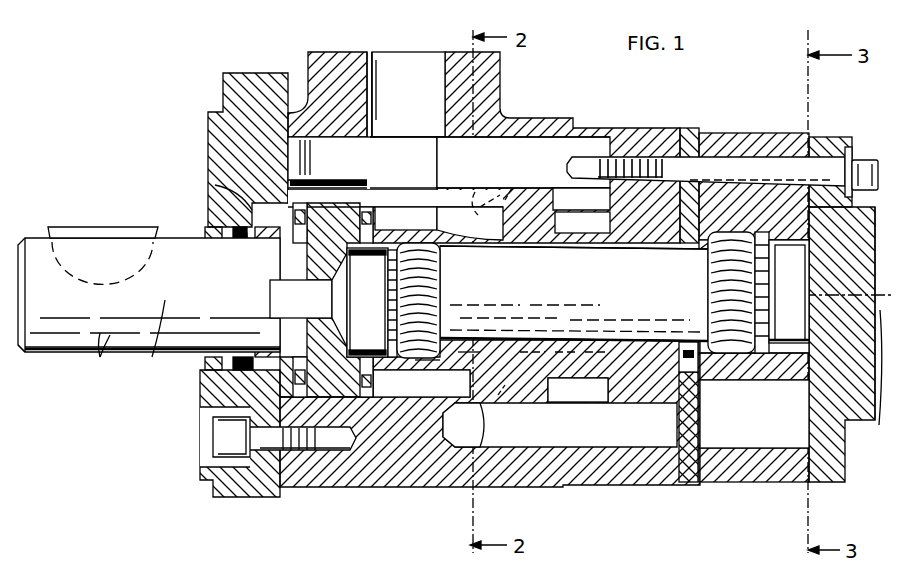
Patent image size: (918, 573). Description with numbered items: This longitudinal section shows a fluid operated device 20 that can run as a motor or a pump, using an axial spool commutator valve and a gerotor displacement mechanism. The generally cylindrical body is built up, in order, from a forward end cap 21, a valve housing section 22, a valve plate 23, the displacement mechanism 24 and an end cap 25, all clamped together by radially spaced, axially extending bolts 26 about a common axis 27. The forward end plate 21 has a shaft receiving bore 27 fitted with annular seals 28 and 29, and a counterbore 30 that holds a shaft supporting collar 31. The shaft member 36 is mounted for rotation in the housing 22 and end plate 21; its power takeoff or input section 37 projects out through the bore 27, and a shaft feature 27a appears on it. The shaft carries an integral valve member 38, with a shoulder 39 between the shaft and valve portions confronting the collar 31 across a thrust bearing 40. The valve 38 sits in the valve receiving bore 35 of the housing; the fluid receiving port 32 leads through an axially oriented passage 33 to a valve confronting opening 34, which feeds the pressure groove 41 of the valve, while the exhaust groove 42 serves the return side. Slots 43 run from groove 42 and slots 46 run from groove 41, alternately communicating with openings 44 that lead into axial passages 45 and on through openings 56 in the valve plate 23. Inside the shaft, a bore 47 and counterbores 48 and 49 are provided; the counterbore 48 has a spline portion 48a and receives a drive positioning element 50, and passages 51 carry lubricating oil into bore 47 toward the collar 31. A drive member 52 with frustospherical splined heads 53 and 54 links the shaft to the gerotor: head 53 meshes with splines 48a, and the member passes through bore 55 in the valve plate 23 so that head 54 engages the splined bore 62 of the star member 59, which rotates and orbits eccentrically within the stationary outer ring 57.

The fluid operated device 20 is at (522, 94).
The forward end cap 21 is at (233, 86).
The valve housing section 22 is at (318, 78).
The valve plate 23 is at (693, 136).
The displacement mechanism 24 is at (754, 127).
The end cap 25 is at (832, 147).
The bolts 26 is at (864, 162).
The axis 27 is at (456, 342).
The keyway 27a is at (195, 240).
The annular seal 28 is at (208, 230).
The annular seal 29 is at (207, 182).
The counterbore 30 is at (272, 203).
The shaft supporting collar 31 is at (243, 253).
The fluid receiving port 32 is at (370, 77).
The axially oriented passage 33 is at (442, 170).
The valve confronting opening 34 is at (580, 207).
The valve receiving bore 35 is at (632, 217).
The shaft member 36 is at (56, 358).
The shaft power takeoff or input section 37 is at (100, 357).
The valve member 38 is at (373, 193).
The shoulder 39 is at (312, 197).
The thrust bearing 40 is at (258, 257).
The fluid receiving groove 41 is at (562, 222).
The exhaust groove 42 is at (414, 229).
The slots 43 is at (478, 208).
The openings 44 is at (470, 403).
The passages 45 is at (632, 439).
The slots 46 is at (515, 188).
The bore 47 is at (578, 374).
The counterbore 48 is at (462, 352).
The spline portion 48a is at (417, 370).
The counterbore 49 is at (318, 283).
The drive positioning element 50 is at (440, 317).
The passages 51 is at (287, 343).
The drive member 52 is at (570, 289).
The head 53 is at (430, 288).
The head 54 is at (728, 278).
The bore 55 is at (687, 248).
The openings 56 is at (692, 427).
The stationary outer ring 57 is at (766, 465).
The star member 59 is at (773, 372).
The bore 62 is at (790, 232).